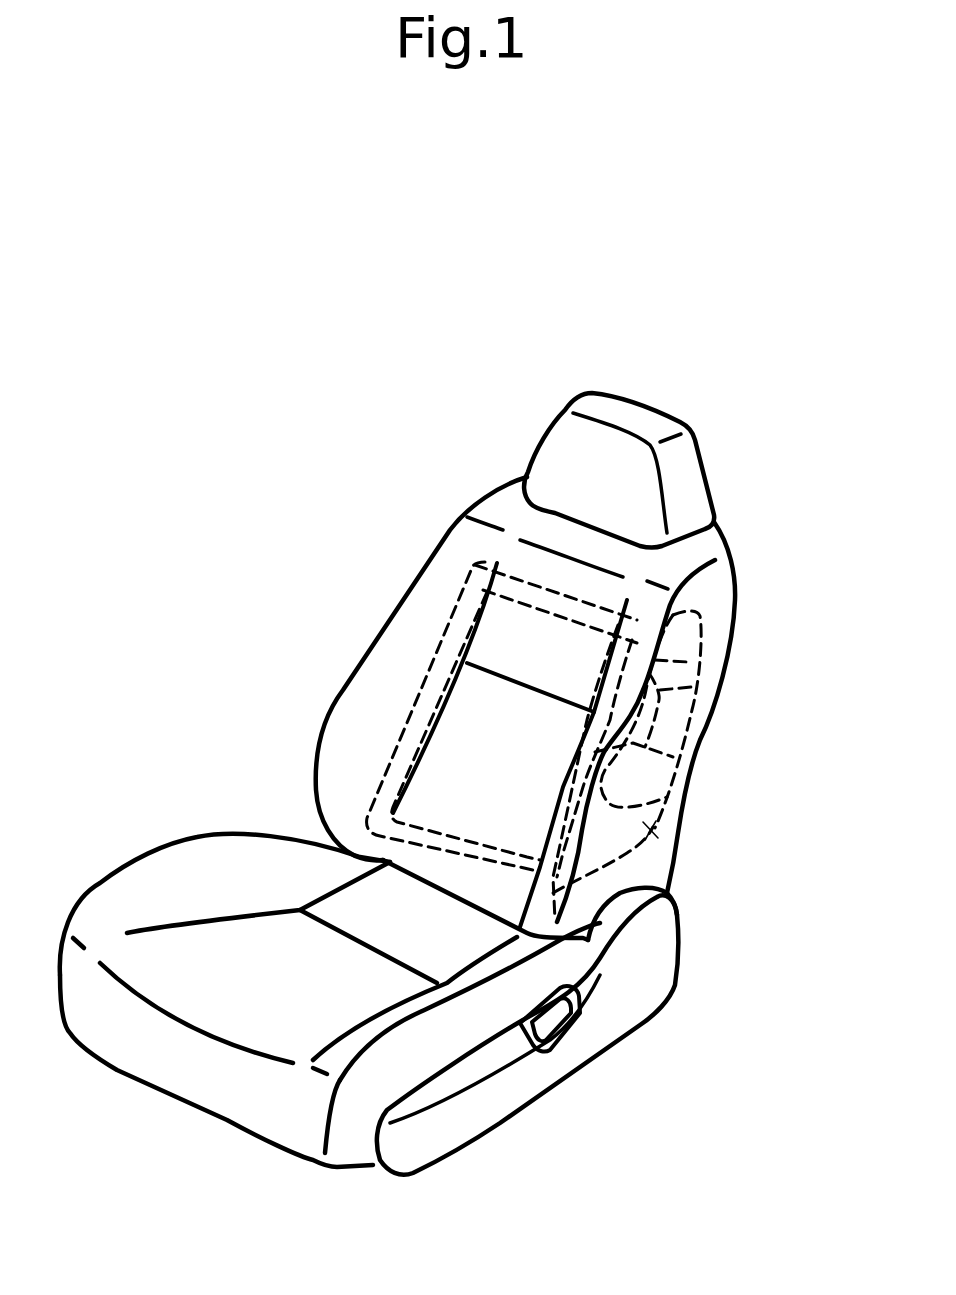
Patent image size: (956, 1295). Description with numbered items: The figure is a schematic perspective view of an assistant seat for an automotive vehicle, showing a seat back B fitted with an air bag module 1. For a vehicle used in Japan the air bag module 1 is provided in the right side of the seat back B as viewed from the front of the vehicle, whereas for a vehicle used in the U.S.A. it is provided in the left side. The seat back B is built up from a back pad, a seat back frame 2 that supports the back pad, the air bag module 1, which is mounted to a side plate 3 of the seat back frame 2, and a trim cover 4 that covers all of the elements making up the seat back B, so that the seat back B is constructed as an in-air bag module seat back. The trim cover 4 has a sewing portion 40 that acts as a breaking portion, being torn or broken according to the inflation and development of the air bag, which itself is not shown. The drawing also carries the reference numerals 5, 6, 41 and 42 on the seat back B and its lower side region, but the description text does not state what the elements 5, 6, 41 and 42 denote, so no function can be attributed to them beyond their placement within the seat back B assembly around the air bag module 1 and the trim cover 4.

The seat back B is at (440, 524).
The air bag module 1 is at (717, 730).
The seat back frame 2 is at (433, 660).
The side plate 3 is at (662, 840).
The trim cover 4 is at (472, 756).
The inflator 5 is at (700, 768).
The inflator housing 6 is at (700, 768).
The sewing portion 40 is at (630, 676).
The seat cushion side portion 41 is at (533, 906).
The side shield 42 is at (665, 872).